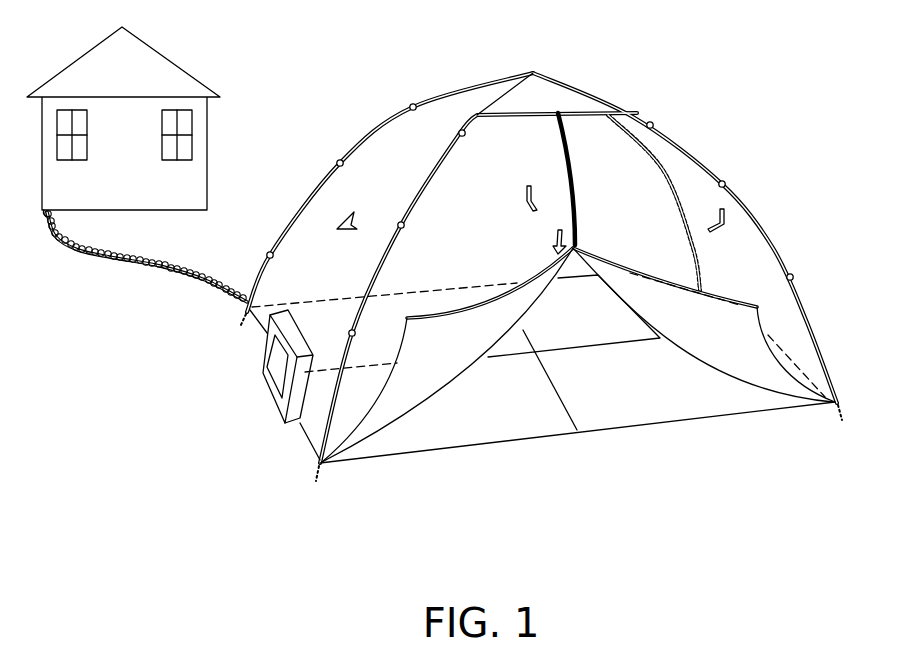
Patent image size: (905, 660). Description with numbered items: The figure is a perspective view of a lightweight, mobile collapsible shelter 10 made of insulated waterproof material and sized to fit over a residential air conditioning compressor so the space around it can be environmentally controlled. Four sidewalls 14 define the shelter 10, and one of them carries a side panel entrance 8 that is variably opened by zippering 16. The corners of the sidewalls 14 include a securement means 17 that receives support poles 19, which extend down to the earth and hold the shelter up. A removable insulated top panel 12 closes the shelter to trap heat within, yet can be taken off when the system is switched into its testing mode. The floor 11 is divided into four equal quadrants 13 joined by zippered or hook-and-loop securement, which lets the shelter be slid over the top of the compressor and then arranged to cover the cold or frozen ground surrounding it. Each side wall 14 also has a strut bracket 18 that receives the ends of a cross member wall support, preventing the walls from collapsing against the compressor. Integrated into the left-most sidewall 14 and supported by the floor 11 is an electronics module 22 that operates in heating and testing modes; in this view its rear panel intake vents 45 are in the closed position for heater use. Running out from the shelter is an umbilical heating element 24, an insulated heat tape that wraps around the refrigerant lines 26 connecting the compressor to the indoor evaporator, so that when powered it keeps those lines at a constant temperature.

The side panel entrance 8 is at (558, 148).
The collapsible shelter 10 is at (264, 47).
The floor 11 is at (607, 430).
The removable insulated top panel 12 is at (568, 97).
The quadrants 13 is at (369, 330).
The sidewalls 14 is at (372, 182).
The zippering 16 is at (450, 318).
The securement means 17 is at (413, 104).
The strut brackets 18 is at (340, 228).
The support poles 19 is at (660, 168).
The electronics module 22 is at (270, 393).
The umbilical heating element 24 is at (135, 252).
The refrigerant lines 26 is at (80, 255).
The rear panel intake vents 45 is at (268, 367).